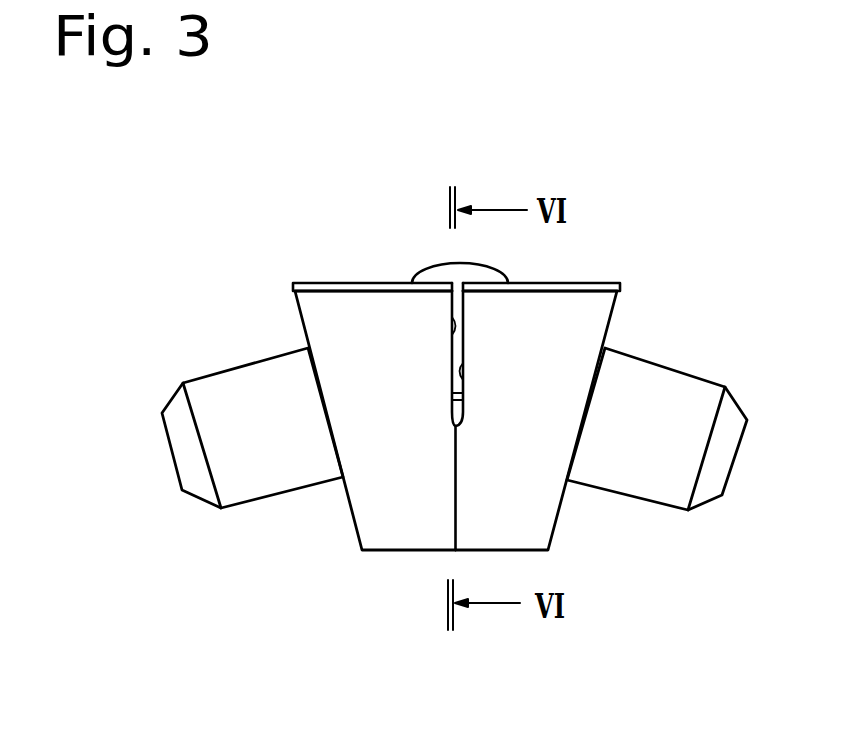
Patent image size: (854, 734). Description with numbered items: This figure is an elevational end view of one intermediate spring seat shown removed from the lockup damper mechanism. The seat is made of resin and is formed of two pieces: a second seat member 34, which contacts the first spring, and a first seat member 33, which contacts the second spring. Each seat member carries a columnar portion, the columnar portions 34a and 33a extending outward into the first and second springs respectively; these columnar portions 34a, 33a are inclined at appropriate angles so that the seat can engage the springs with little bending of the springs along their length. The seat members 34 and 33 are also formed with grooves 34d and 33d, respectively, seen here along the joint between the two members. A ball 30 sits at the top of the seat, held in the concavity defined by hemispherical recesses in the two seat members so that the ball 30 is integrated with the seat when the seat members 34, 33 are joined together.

The ball 30 is at (438, 272).
The first seat member 33 is at (632, 309).
The second seat member 34 is at (274, 300).
The columnar portion 33a is at (652, 472).
The columnar portion 34a is at (252, 472).
The groove 33d is at (463, 387).
The groove 34d is at (452, 342).